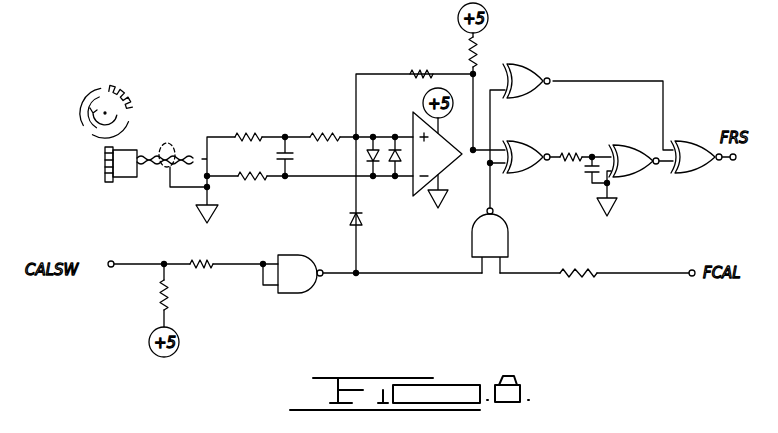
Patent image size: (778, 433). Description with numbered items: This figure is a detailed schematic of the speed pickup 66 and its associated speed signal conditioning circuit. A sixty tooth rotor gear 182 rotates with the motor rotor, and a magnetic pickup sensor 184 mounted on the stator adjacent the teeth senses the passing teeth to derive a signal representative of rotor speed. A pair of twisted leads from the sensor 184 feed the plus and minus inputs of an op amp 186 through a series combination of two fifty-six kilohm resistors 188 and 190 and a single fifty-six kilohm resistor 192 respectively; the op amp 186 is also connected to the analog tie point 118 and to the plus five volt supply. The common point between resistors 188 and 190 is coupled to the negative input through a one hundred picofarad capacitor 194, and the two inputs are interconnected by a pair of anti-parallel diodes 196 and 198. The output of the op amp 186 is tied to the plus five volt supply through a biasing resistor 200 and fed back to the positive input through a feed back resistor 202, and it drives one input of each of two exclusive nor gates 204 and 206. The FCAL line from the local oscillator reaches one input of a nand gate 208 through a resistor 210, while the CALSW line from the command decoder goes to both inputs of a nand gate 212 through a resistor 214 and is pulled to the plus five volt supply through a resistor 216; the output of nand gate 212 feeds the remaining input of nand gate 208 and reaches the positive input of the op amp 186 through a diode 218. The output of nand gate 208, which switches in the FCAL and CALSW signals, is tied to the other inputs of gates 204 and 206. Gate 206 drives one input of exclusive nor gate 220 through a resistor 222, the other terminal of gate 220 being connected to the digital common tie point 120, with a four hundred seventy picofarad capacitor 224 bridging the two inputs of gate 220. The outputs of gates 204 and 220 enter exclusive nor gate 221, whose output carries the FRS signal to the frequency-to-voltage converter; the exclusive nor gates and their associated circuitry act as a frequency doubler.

The speed pickup 66 is at (86, 153).
The rotor gear 182 is at (103, 102).
The magnetic pickup sensor 184 is at (110, 182).
The analog tie point 118 is at (196, 213).
The digital common tie point 120 is at (612, 210).
The op amp 186 is at (443, 160).
The resistor 188 is at (250, 107).
The resistor 190 is at (325, 132).
The resistor 192 is at (250, 180).
The capacitor 194 is at (293, 157).
The diode 196 is at (373, 173).
The diode 198 is at (387, 133).
The biasing resistor 200 is at (480, 52).
The feed back resistor 202 is at (418, 67).
The exclusive nor gate 204 is at (532, 67).
The exclusive nor gate 206 is at (520, 140).
The nand gate 208 is at (510, 228).
The resistor 210 is at (590, 268).
The nand gate 212 is at (303, 292).
The resistor 214 is at (200, 270).
The resistor 216 is at (166, 298).
The diode 218 is at (362, 220).
The exclusive nor gate 220 is at (637, 176).
The exclusive nor gate 221 is at (693, 140).
The resistor 222 is at (570, 150).
The capacitor 224 is at (580, 178).